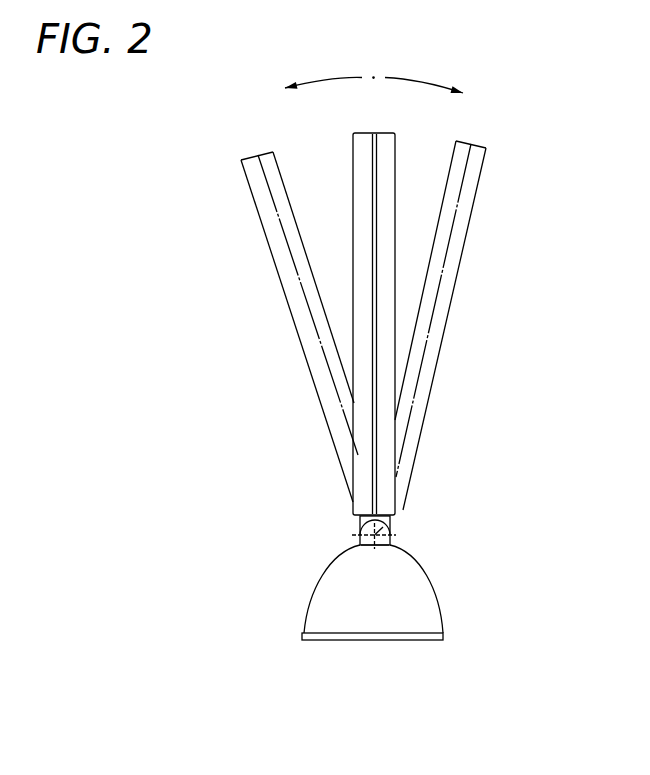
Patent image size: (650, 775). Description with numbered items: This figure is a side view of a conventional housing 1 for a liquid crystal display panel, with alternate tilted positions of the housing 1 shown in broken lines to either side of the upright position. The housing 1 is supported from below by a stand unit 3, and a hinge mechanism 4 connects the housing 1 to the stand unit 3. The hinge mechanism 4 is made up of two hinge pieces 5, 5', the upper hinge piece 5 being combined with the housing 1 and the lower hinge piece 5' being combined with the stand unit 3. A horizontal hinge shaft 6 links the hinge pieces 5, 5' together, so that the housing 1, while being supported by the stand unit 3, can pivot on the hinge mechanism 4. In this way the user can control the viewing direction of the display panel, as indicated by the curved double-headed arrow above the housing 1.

The housing 1 is at (402, 306).
The stand unit 3 is at (417, 588).
The hinge mechanism 4 is at (301, 546).
The hinge piece 5 is at (291, 516).
The hinge piece 5' is at (290, 568).
The horizontal hinge shaft 6 is at (392, 523).